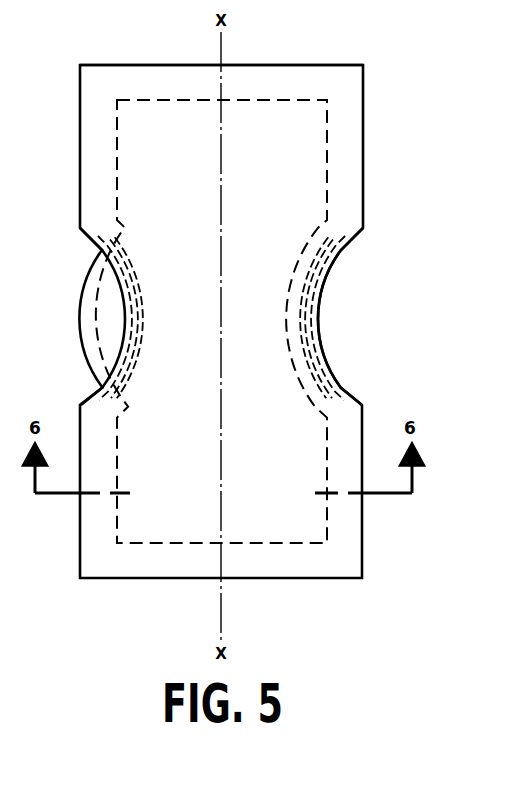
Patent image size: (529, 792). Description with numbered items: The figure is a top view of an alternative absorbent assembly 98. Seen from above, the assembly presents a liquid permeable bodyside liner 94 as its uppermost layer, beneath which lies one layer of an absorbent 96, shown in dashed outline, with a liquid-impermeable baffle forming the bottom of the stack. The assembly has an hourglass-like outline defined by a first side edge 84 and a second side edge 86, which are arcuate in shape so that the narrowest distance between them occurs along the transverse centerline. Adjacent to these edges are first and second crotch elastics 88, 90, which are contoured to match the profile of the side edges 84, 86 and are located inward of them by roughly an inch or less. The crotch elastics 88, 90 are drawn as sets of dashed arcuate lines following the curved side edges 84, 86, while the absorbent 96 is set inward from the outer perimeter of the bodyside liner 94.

The first side edge 84 is at (112, 366).
The second side edge 86 is at (333, 378).
The first crotch elastic 88 is at (133, 320).
The second crotch elastic 90 is at (305, 302).
The liquid permeable bodyside liner 94 is at (312, 72).
The absorbent 96 is at (313, 192).
The absorbent assembly 98 is at (421, 68).